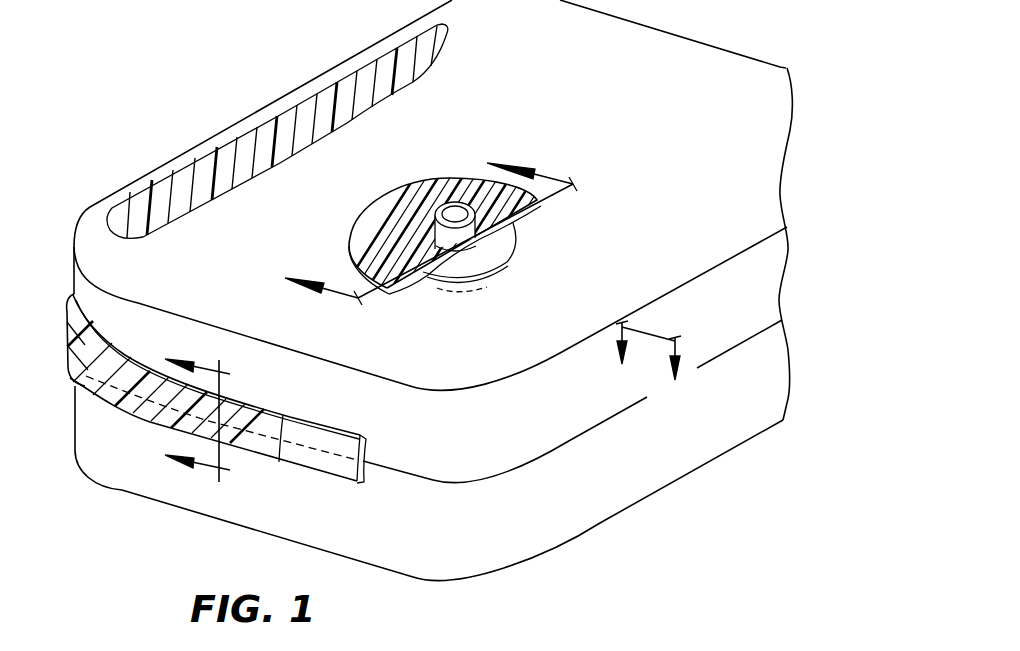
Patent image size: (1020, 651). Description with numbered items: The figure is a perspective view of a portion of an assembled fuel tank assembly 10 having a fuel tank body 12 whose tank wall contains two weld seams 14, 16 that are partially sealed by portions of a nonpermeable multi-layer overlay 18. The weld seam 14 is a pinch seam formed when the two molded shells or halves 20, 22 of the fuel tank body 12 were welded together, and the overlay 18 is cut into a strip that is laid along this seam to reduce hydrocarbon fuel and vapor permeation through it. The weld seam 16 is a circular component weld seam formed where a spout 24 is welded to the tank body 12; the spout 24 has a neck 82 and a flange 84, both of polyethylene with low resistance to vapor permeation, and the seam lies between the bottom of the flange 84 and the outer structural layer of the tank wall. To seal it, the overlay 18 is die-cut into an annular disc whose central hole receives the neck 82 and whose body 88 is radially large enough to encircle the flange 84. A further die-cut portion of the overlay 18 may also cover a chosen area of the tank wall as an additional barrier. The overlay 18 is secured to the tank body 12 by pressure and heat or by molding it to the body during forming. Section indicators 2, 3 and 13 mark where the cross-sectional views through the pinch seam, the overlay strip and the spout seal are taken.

The fuel tank assembly 10 is at (243, 85).
The fuel tank body 12 is at (180, 156).
The weld seam 14 is at (567, 441).
The weld seam 16 is at (463, 250).
The multi-layer overlay 18 is at (362, 74).
The molded shell 20 is at (754, 46).
The molded shell 22 is at (481, 528).
The spout 24 is at (464, 264).
The neck 82 is at (473, 242).
The flange 84 is at (508, 250).
The body 88 is at (352, 226).
The section line 2- 2 is at (648, 368).
The section line 3- 3 is at (186, 405).
The section line 13- 13 is at (426, 226).